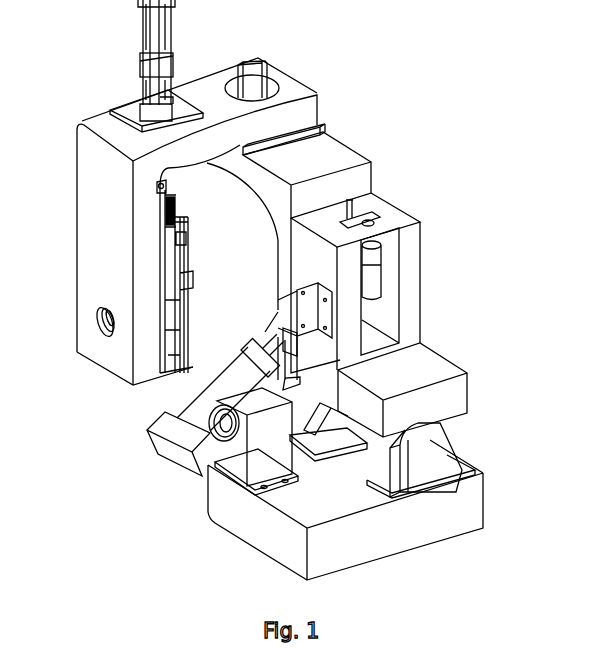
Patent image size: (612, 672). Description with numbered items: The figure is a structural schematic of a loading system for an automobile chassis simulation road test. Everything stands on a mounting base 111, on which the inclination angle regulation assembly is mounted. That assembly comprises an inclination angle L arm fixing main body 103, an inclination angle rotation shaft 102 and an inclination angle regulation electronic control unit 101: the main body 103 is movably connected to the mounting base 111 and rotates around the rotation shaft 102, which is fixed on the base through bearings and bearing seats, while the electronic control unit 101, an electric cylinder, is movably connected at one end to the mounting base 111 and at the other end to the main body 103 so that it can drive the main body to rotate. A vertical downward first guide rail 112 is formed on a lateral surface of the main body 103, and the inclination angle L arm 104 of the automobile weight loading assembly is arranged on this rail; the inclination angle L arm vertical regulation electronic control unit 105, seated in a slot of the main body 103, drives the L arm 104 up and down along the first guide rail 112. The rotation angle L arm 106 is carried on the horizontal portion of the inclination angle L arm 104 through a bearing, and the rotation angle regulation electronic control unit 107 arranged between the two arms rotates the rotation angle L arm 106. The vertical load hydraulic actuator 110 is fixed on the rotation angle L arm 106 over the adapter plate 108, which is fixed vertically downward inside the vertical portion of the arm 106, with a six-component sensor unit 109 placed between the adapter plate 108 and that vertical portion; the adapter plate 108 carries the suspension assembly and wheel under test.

The inclination angle regulation electronic control unit 101 is at (181, 435).
The inclination angle rotation shaft 102 is at (449, 463).
The inclination angle L arm fixing main body 103 is at (394, 372).
The inclination angle L arm 104 is at (346, 188).
The inclination angle L arm vertical regulation electronic control unit 105 is at (372, 265).
The rotation angle L arm 106 is at (132, 318).
The rotation angle regulation electronic control unit 107 is at (264, 79).
The adapter plate 108 is at (154, 225).
The six-component sensor unit 109 is at (154, 268).
The vertical load hydraulic actuator 110 is at (155, 66).
The mounting base 111 is at (477, 518).
The first guide rail 112 is at (361, 200).